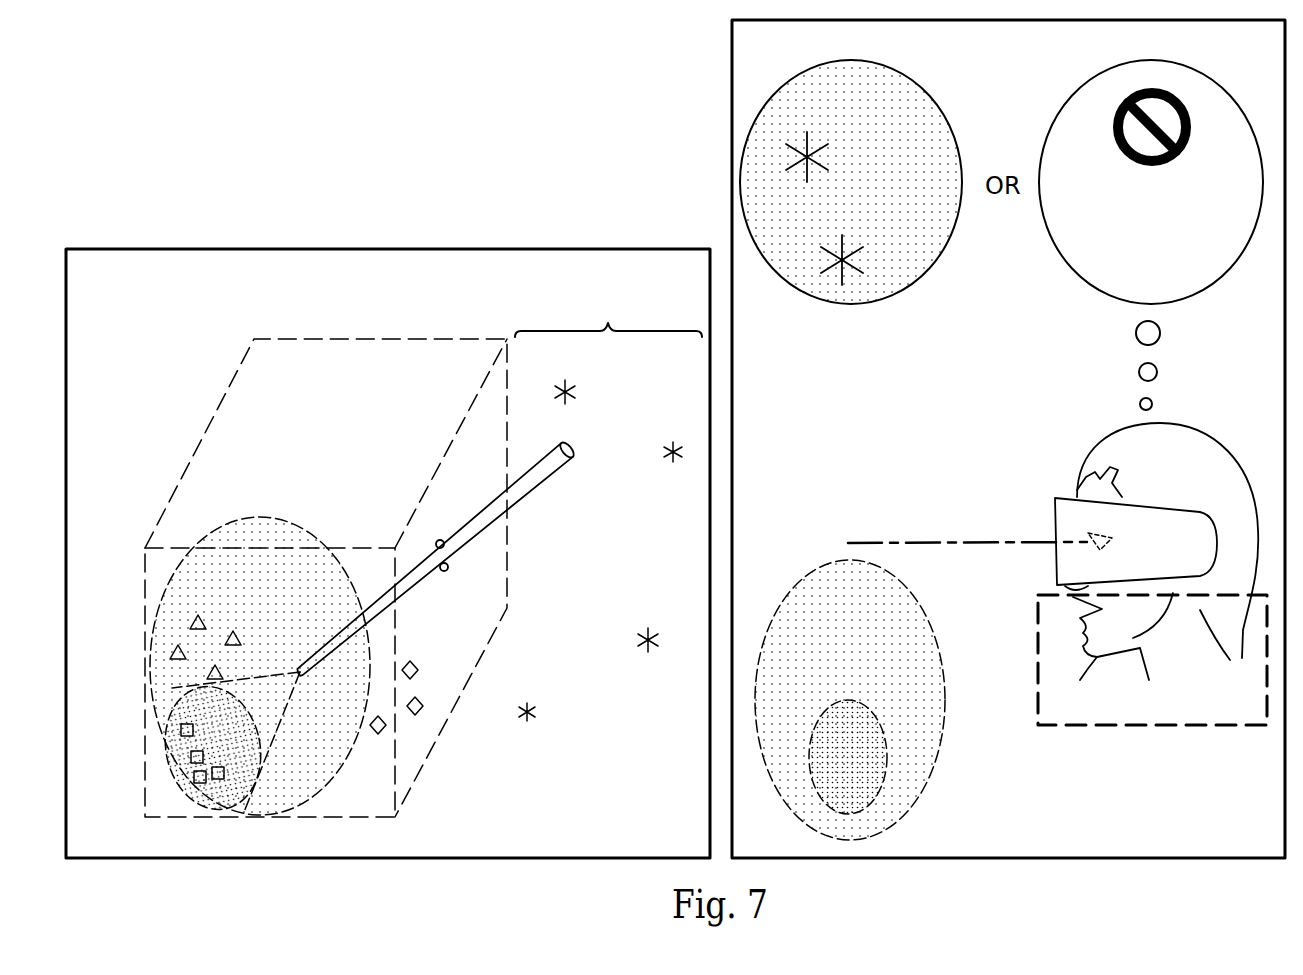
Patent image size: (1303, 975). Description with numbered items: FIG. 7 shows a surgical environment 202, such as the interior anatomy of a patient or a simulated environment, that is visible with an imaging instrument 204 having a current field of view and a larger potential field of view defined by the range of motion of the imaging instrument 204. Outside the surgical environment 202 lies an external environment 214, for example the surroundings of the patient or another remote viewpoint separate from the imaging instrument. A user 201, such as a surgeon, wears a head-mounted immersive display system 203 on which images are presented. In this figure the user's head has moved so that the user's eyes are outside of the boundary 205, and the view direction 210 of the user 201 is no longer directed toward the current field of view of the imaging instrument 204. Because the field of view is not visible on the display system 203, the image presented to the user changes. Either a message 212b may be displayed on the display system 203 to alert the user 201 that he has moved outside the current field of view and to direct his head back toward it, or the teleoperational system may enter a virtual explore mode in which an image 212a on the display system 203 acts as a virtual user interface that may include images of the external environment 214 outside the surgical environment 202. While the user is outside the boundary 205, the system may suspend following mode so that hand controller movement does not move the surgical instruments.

The user 201 is at (1115, 652).
The surgical environment 202 is at (507, 573).
The head-mounted immersive display system 203 is at (1170, 506).
The imaging instrument 204 is at (537, 490).
The boundary 205 is at (1038, 655).
The view direction 210 is at (1000, 540).
The image 212a is at (920, 84).
The message 212b is at (1222, 84).
The environment 214 is at (608, 508).